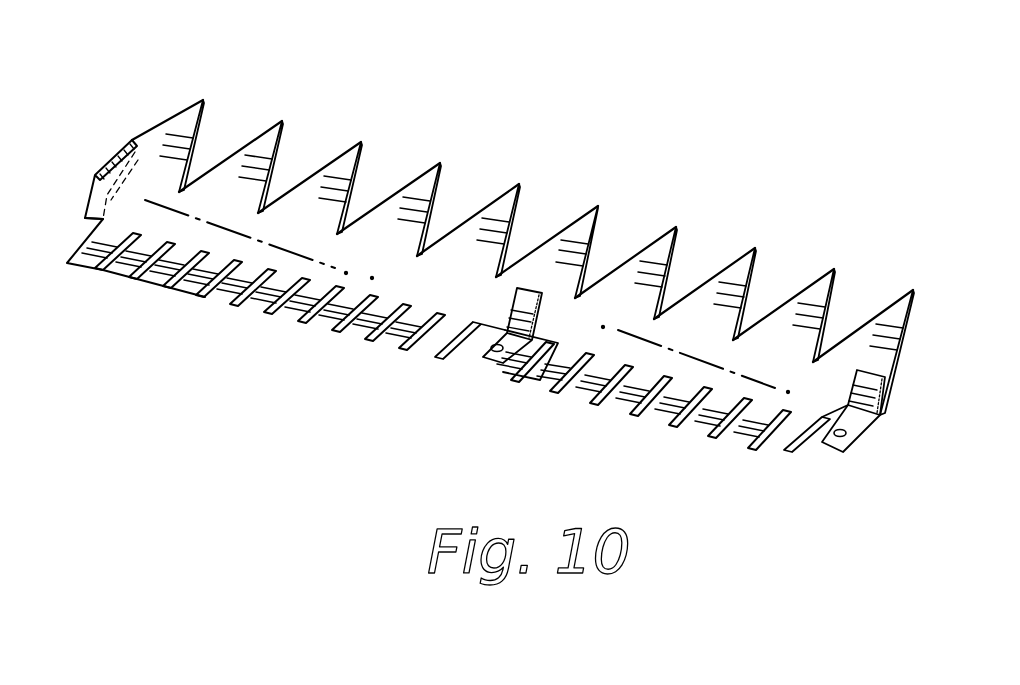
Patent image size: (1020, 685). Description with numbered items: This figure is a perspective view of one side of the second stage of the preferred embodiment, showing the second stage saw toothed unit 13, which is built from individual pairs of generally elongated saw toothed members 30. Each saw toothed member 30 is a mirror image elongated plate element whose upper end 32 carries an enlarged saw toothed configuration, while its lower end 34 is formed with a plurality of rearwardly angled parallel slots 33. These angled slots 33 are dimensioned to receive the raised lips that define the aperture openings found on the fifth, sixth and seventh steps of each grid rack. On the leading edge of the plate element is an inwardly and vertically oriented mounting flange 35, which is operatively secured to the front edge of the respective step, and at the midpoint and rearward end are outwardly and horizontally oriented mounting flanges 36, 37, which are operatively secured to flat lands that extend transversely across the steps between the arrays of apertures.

The second stage saw toothed unit 13 is at (387, 27).
The saw toothed member 30 is at (762, 199).
The upper end 32 is at (520, 186).
The rearwardly angled parallel slots 33 is at (195, 290).
The lower end 34 is at (300, 318).
The inwardly and vertically oriented mounting flange 35 is at (132, 140).
The outwardly and horizontally oriented mounting flange 36 is at (492, 363).
The outwardly and horizontally oriented mounting flange 37 is at (843, 452).